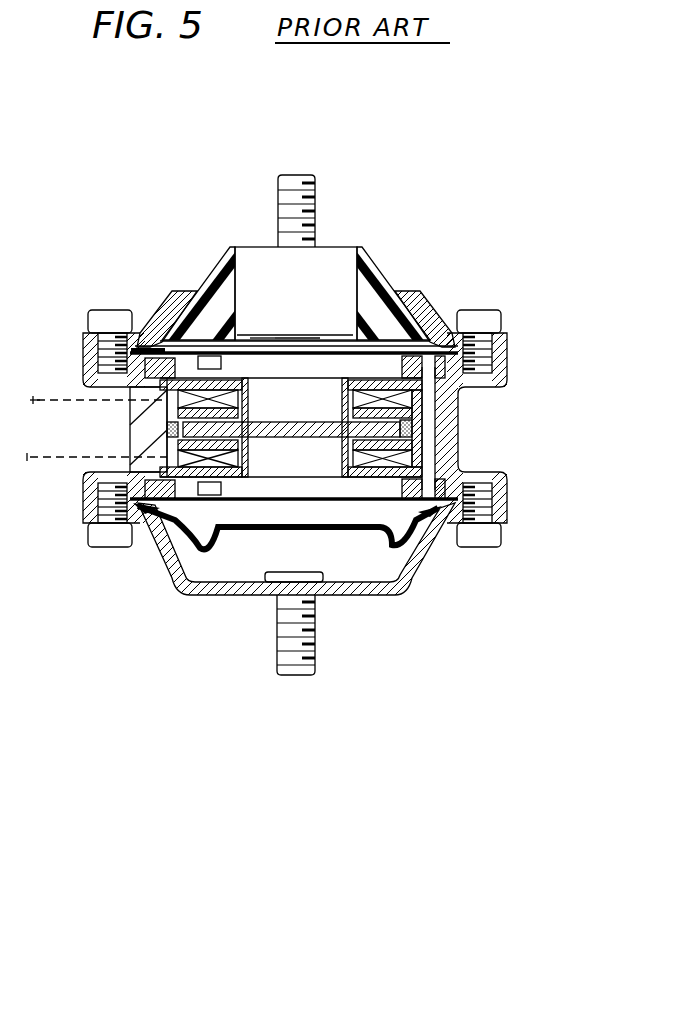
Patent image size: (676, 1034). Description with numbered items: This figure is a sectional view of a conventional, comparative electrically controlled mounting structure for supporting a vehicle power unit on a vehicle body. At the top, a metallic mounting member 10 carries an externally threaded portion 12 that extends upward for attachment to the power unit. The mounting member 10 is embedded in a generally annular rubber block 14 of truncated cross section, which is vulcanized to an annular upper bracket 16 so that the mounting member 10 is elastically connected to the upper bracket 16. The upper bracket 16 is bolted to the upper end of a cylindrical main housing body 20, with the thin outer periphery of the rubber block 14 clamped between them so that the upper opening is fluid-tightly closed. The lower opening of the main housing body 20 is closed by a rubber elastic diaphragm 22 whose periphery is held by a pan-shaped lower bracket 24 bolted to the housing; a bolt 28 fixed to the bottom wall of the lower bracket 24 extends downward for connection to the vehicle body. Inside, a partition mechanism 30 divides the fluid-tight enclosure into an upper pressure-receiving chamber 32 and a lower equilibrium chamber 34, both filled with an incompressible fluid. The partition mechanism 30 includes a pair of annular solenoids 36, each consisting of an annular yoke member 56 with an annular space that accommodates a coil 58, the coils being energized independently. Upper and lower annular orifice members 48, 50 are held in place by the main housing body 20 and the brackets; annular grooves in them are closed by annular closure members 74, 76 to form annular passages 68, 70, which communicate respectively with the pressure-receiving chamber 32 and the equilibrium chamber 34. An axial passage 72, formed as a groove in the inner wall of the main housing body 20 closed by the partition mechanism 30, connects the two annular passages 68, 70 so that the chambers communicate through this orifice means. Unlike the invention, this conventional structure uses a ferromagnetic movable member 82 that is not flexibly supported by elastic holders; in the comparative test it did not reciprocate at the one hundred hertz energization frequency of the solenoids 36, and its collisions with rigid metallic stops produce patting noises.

The mounting member 10 is at (333, 253).
The externally threaded portion 12 is at (297, 183).
The rubber block 14 is at (377, 288).
The upper bracket 16 is at (432, 318).
The main housing body 20 is at (450, 405).
The elastic diaphragm 22 is at (243, 531).
The lower bracket 24 is at (333, 590).
The bolt 28 is at (297, 663).
The partition mechanism 30 is at (440, 446).
The pressure-receiving chamber 32 is at (258, 336).
The equilibrium chamber 34 is at (432, 515).
The annular solenoid 36 is at (382, 362).
The annular orifice member 48 is at (197, 354).
The annular orifice member 50 is at (152, 468).
The annular yoke member 56 is at (418, 400).
The coil 58 is at (181, 396).
The annular passage 68 is at (146, 347).
The annular passage 70 is at (163, 498).
The axial passage 72 is at (428, 424).
The annular closure member 74 is at (158, 362).
The annular closure member 76 is at (160, 500).
The ferromagnetic movable member 82 is at (282, 437).